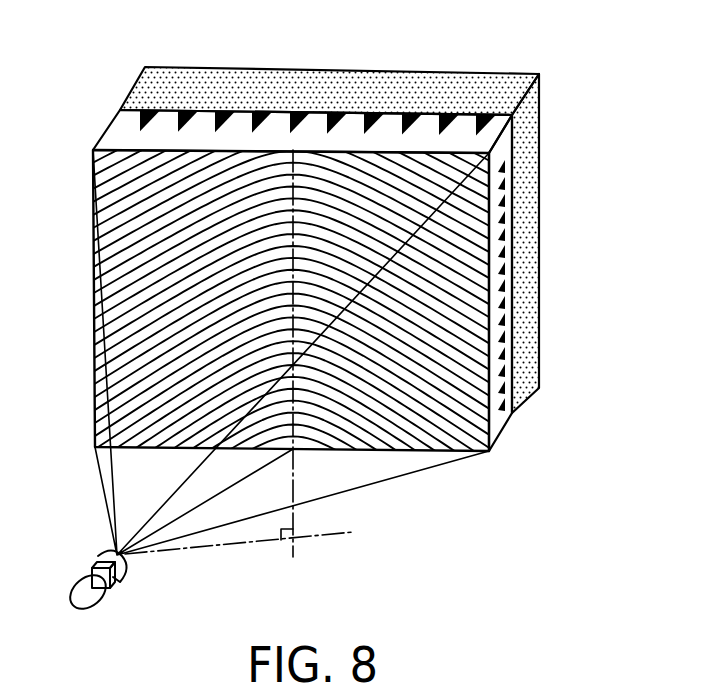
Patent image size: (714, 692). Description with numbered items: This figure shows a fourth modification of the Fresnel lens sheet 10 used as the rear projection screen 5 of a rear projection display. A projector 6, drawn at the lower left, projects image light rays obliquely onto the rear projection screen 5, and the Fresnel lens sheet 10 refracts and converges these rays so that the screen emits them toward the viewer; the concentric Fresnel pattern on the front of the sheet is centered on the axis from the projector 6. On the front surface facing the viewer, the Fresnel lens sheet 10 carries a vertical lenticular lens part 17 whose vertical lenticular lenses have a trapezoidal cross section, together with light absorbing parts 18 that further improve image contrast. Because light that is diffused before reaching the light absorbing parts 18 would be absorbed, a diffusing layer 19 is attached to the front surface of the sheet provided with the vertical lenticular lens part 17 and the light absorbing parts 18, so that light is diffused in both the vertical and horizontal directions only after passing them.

The rear projection screen 5 is at (352, 316).
The projector 6 is at (72, 566).
The Fresnel lens sheet 10 is at (486, 141).
The vertical lenticular lens part 17 is at (348, 131).
The light absorbing parts 18 is at (448, 113).
The diffusing layer 19 is at (517, 90).